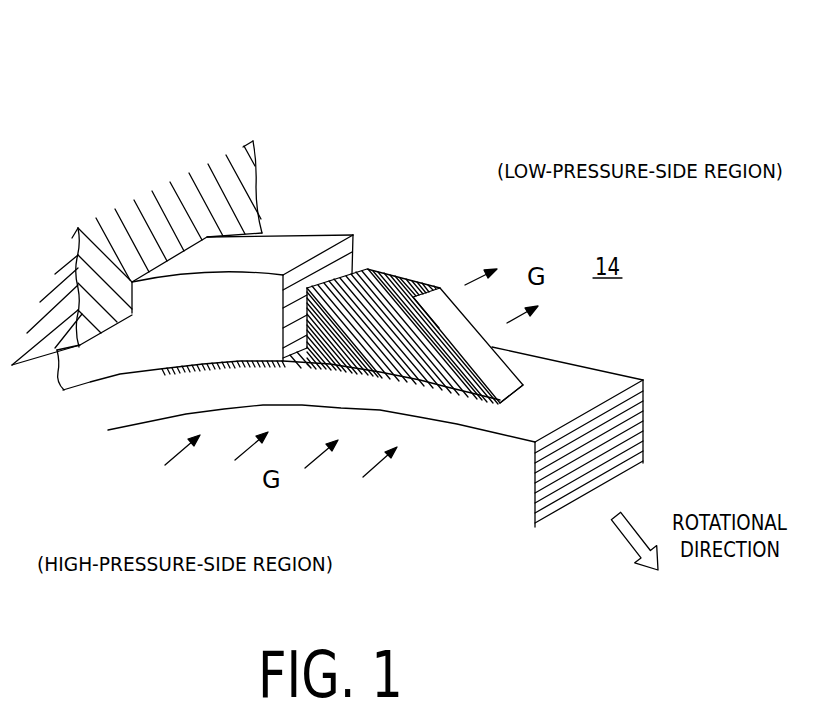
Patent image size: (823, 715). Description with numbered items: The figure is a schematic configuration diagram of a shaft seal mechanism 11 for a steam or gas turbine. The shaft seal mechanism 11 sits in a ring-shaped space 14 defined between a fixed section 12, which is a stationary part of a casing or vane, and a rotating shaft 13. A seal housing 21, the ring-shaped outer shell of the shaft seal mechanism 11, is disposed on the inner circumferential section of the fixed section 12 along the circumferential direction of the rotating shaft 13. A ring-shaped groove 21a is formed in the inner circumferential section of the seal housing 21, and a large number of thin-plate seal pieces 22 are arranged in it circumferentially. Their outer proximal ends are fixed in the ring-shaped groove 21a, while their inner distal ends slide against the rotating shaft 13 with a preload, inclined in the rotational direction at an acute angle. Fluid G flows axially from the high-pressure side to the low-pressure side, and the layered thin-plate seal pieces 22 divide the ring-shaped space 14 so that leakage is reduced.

The shaft seal mechanism 11 is at (428, 76).
The fixed section 12 is at (257, 168).
The rotating shaft 13 is at (619, 363).
The ring-shaped space 14 is at (358, 420).
The seal housing 21 is at (303, 233).
The ring-shaped groove 21a is at (367, 270).
The thin-plate seal pieces 22 is at (502, 388).